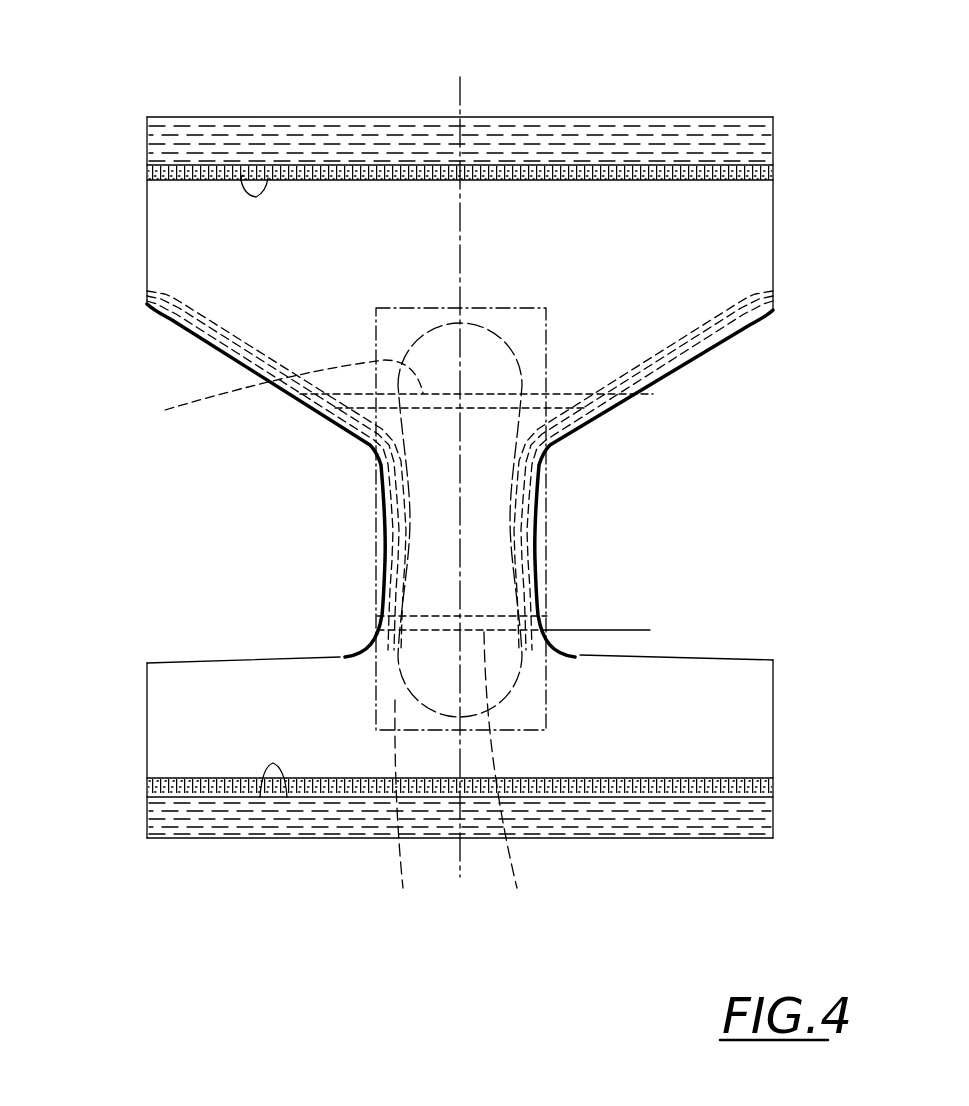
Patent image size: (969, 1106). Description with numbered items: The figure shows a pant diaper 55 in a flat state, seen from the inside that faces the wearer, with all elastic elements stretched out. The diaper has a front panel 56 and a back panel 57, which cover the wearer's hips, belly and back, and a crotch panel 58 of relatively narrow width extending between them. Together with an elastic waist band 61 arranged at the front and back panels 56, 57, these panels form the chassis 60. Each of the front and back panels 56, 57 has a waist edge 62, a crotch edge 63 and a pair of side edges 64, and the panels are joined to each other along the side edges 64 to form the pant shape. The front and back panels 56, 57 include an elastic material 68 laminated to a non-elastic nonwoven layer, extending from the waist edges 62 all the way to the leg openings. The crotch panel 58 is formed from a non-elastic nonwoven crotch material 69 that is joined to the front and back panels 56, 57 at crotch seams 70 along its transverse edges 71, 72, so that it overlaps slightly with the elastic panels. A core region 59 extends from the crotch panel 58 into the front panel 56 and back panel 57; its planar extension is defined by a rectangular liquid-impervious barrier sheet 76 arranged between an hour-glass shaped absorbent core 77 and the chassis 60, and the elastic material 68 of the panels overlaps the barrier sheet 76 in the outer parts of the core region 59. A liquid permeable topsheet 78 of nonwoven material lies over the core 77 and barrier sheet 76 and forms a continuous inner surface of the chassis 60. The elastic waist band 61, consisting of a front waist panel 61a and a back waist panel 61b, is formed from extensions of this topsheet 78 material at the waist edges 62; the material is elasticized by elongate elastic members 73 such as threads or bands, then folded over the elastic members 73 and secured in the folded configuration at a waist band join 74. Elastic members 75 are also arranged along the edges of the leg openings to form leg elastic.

The pant diaper 55 is at (700, 105).
The front panel 56 is at (755, 708).
The back panel 57 is at (745, 232).
The crotch panel 58 is at (658, 628).
The core region 59 is at (518, 333).
The chassis 60 is at (228, 296).
The elastic waist band 61 is at (460, 474).
The front waist panel 61a is at (232, 815).
The back waist panel 61b is at (507, 145).
The waist edge 62 is at (322, 178).
The crotch edge 63 is at (720, 338).
The side edges 64 is at (147, 193).
The elastic material 68 is at (170, 237).
The crotch material 69 is at (380, 470).
The crotch seams 70 is at (342, 428).
The transverse edge 71 is at (508, 775).
The transverse edge 72 is at (278, 391).
The elastic members 73 is at (620, 145).
The waist band join 74 is at (268, 178).
The elastic members 75 is at (215, 352).
The liquid-impervious barrier sheet 76 is at (407, 809).
The absorbent core 77 is at (497, 570).
The topsheet 78 is at (450, 542).